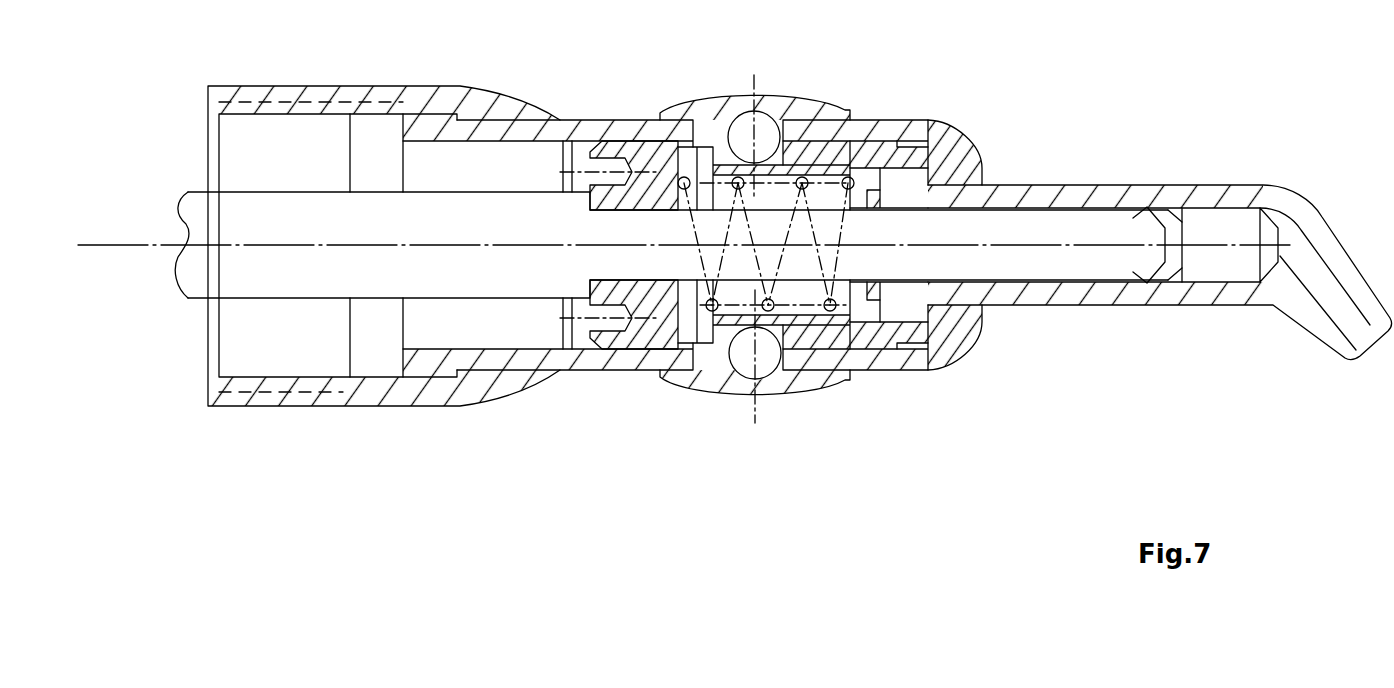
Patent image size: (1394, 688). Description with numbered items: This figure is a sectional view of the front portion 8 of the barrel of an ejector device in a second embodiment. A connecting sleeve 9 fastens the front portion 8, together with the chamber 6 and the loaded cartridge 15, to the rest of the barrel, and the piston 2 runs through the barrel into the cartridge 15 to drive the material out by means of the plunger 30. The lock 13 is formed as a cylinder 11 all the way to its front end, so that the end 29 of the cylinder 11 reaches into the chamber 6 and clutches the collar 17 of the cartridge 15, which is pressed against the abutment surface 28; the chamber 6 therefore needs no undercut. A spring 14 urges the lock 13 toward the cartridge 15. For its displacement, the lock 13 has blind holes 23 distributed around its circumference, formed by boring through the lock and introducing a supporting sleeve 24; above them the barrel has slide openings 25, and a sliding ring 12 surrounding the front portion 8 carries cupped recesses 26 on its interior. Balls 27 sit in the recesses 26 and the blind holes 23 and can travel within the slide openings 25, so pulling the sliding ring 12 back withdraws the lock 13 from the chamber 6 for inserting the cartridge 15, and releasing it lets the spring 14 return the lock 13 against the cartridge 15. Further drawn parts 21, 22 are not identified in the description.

The piston 2 is at (253, 273).
The chamber 6 is at (910, 323).
The front portion of the barrel 8 is at (568, 362).
The connecting sleeve 9 is at (372, 393).
The cylinder 11 is at (877, 150).
The sliding ring 12 is at (723, 378).
The lock 13 is at (840, 330).
The spring 14 is at (803, 180).
The cartridge 15 is at (1053, 293).
The collar 17 is at (908, 180).
The screw bore 21 is at (650, 328).
The bearing block 22 is at (608, 302).
The blind holes 23 is at (780, 328).
The supporting sleeve 24 is at (840, 168).
The slide openings 25 is at (803, 353).
The recesses 26 is at (767, 112).
The balls 27 is at (763, 363).
The abutment surface 28 is at (928, 305).
The end of the cylinder 29 is at (885, 328).
The plunger 30 is at (1220, 263).